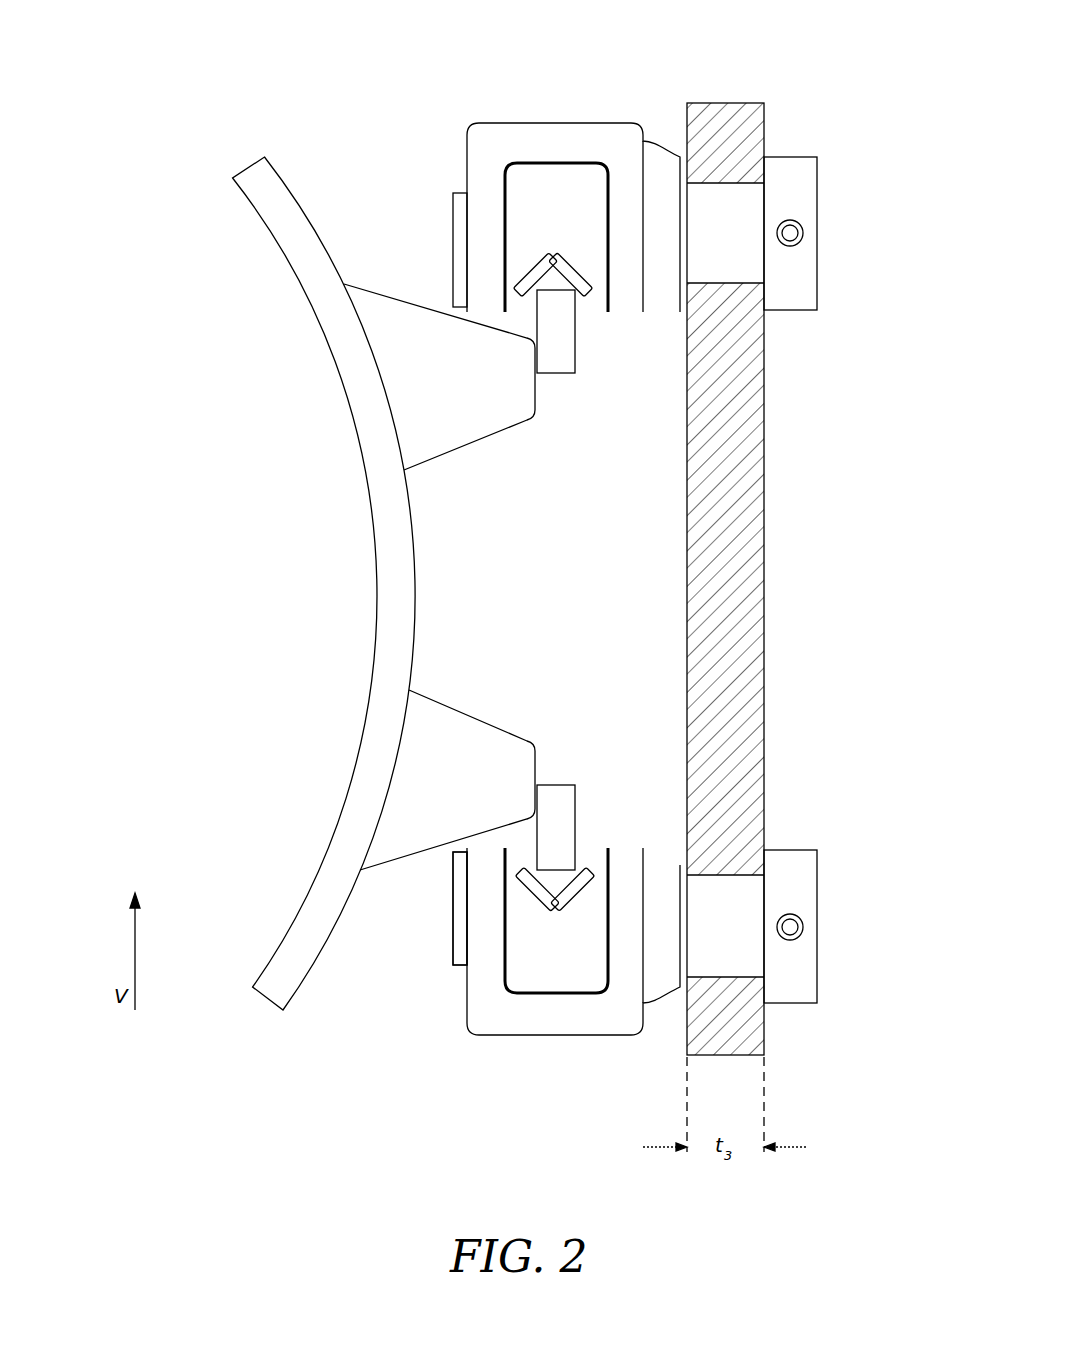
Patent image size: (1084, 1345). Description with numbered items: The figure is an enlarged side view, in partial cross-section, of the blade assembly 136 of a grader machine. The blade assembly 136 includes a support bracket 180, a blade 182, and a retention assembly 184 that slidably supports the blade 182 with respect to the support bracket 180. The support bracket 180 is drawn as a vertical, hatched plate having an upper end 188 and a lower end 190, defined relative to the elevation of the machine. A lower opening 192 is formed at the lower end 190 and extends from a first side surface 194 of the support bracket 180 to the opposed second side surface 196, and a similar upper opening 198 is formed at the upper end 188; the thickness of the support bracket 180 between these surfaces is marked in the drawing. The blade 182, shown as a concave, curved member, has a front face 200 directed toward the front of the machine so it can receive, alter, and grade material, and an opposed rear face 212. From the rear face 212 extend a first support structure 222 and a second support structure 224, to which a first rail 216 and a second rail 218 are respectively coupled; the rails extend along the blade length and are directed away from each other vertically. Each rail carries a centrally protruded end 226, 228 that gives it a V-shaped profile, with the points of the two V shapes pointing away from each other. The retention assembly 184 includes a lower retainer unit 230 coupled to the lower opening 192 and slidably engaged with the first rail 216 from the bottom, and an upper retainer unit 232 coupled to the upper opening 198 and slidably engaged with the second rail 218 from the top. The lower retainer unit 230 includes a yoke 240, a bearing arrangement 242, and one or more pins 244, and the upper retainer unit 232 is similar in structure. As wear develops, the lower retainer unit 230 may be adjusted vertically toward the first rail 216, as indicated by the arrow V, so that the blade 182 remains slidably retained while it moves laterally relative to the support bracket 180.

The blade assembly 136 is at (203, 76).
The support bracket 180 is at (765, 507).
The blade 182 is at (288, 933).
The retention assembly 184 is at (583, 1042).
The upper end 188 is at (767, 128).
The lower end 190 is at (765, 1025).
The lower opening 192 is at (717, 977).
The first side surface 194 is at (765, 796).
The second side surface 196 is at (687, 598).
The upper opening 198 is at (727, 183).
The front face 200 is at (310, 888).
The rear face 212 is at (415, 545).
The first rail 216 is at (577, 810).
The second rail 218 is at (577, 350).
The first support structure 222 is at (487, 720).
The second support structure 224 is at (490, 440).
The centrally protruded end 226 is at (547, 907).
The centrally protruded end 228 is at (555, 273).
The lower retainer unit 230 is at (539, 1042).
The upper retainer unit 232 is at (582, 122).
The yoke 240 is at (483, 1040).
The bearing arrangement 242 is at (503, 210).
The pins 244 is at (453, 937).